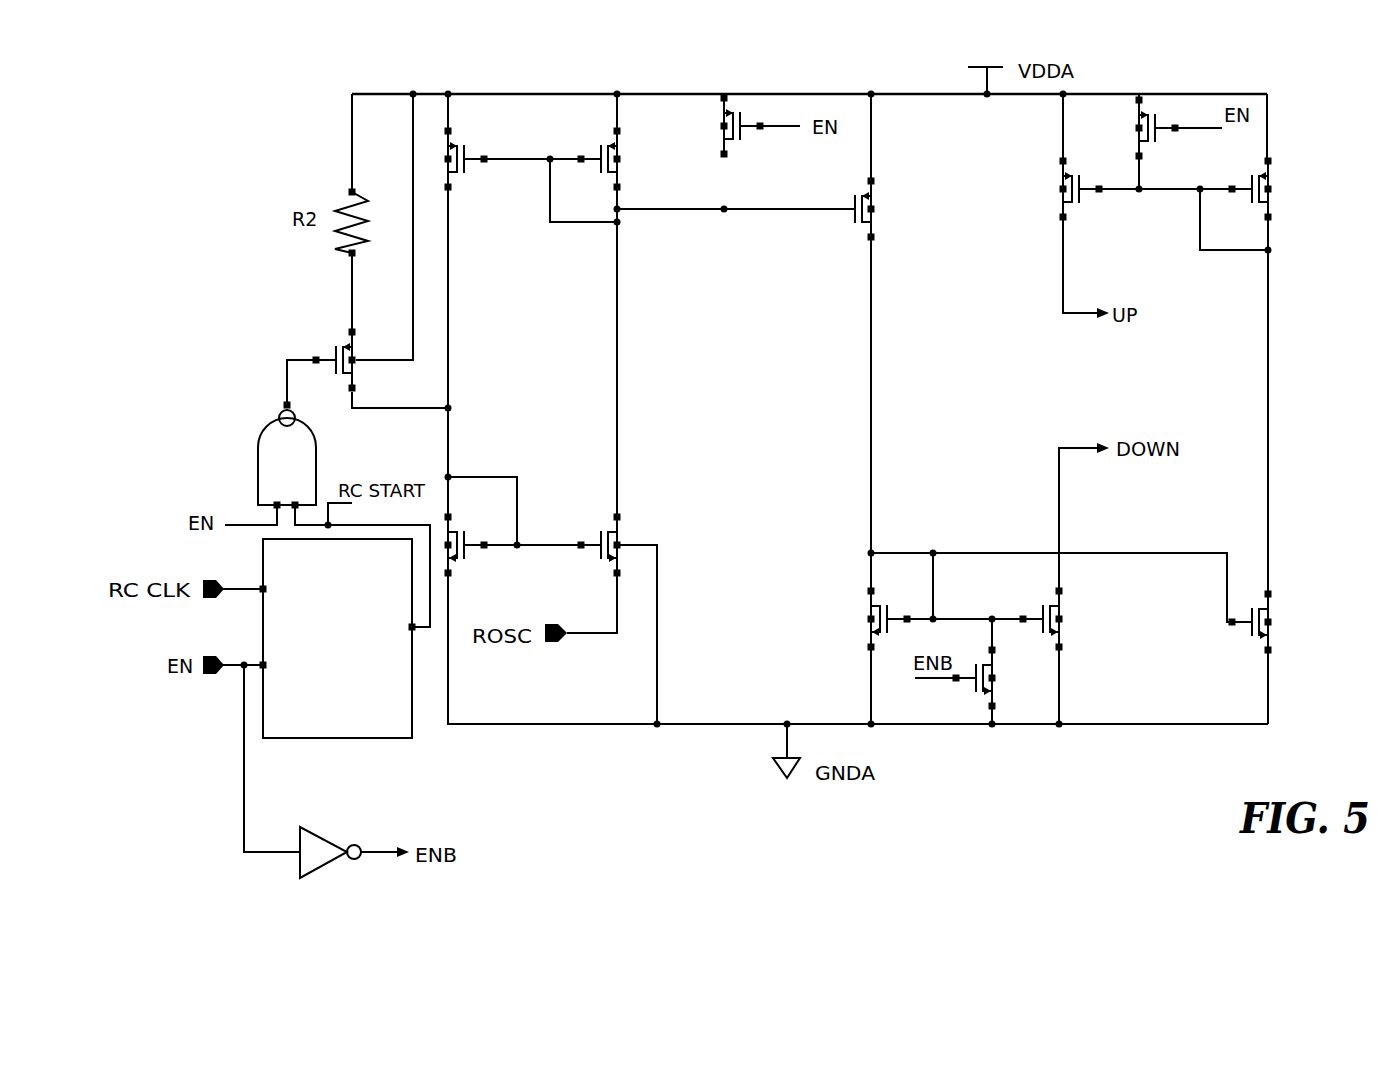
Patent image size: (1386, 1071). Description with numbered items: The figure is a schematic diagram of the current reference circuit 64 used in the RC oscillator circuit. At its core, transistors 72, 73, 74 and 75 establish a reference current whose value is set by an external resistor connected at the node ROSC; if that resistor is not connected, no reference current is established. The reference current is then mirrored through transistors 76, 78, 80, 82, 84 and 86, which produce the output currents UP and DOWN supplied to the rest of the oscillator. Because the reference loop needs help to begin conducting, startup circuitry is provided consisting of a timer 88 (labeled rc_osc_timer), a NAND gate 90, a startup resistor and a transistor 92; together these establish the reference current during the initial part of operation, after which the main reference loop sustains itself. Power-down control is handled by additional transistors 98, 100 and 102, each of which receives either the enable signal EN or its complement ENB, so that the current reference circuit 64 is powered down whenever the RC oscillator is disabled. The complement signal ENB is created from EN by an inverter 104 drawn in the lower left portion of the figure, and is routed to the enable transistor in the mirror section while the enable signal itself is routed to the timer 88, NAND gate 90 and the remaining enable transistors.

The current reference circuit 64 is at (320, 153).
The transistor 72 is at (611, 142).
The transistor 73 is at (455, 182).
The transistor 74 is at (611, 530).
The transistor 75 is at (456, 530).
The transistor 76 is at (864, 231).
The transistor 78 is at (876, 603).
The transistor 80 is at (1051, 602).
The transistor 82 is at (1258, 641).
The transistor 84 is at (1261, 214).
The transistor 86 is at (1068, 206).
The timer 88 is at (345, 739).
The NAND gate 90 is at (258, 460).
The transistor 92 is at (346, 344).
The transistor 98 is at (990, 668).
The transistor 100 is at (1148, 146).
The transistor 102 is at (731, 148).
The inverter 104 is at (321, 835).